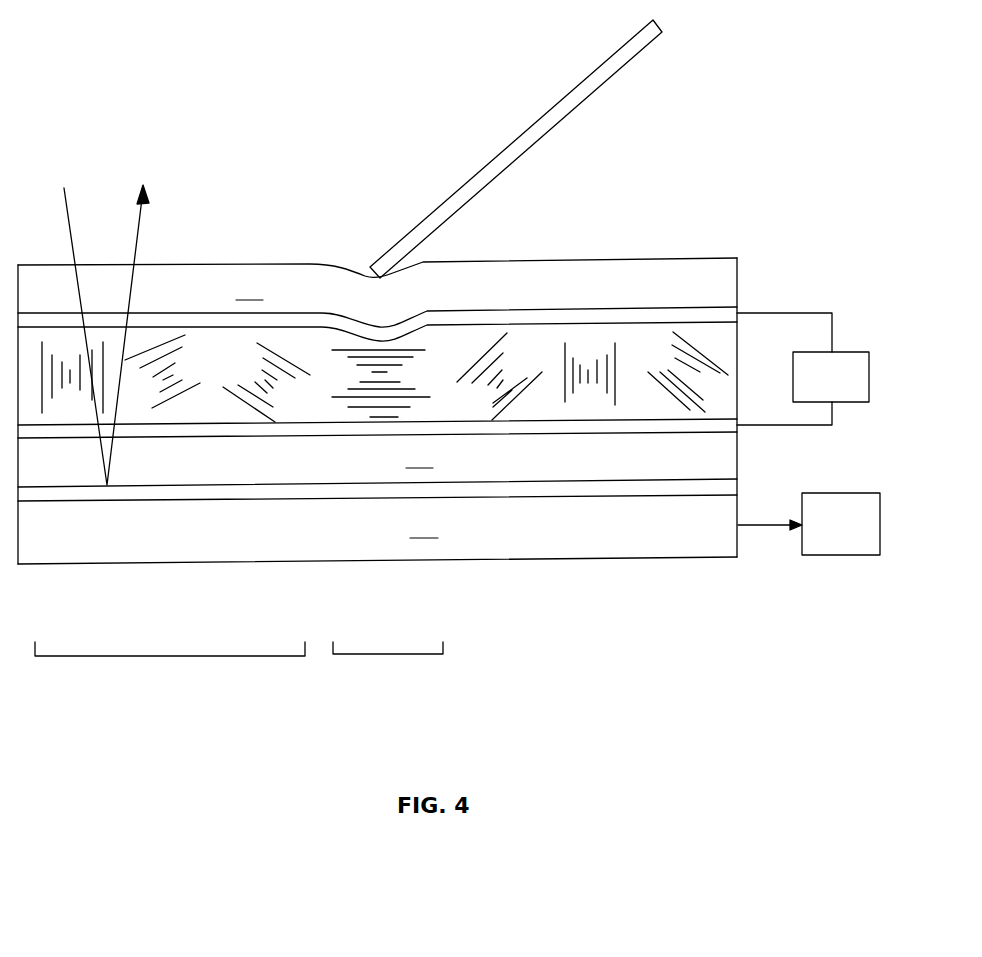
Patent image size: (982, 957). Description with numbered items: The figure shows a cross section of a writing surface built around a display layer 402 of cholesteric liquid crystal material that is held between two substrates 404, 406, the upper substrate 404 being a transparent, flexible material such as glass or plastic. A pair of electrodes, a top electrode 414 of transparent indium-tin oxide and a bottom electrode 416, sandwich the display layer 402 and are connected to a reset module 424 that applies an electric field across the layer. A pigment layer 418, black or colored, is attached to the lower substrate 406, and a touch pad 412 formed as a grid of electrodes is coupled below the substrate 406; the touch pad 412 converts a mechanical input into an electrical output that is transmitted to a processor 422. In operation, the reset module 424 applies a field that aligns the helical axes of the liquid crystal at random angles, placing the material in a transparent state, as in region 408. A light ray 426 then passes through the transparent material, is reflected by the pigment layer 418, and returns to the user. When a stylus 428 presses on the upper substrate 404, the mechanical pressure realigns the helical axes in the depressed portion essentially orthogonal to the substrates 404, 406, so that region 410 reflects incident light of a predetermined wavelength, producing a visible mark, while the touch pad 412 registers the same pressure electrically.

The display layer 402 is at (293, 407).
The substrate 404 is at (377, 292).
The substrate 406 is at (377, 468).
The region 408 is at (180, 656).
The region 410 is at (397, 654).
The touch pad 412 is at (377, 541).
The top electrode 414 is at (662, 318).
The bottom electrode 416 is at (627, 424).
The pigment layer 418 is at (175, 493).
The processor 422 is at (827, 535).
The reset module 424 is at (817, 389).
The light ray 426 is at (143, 233).
The stylus 428 is at (549, 153).